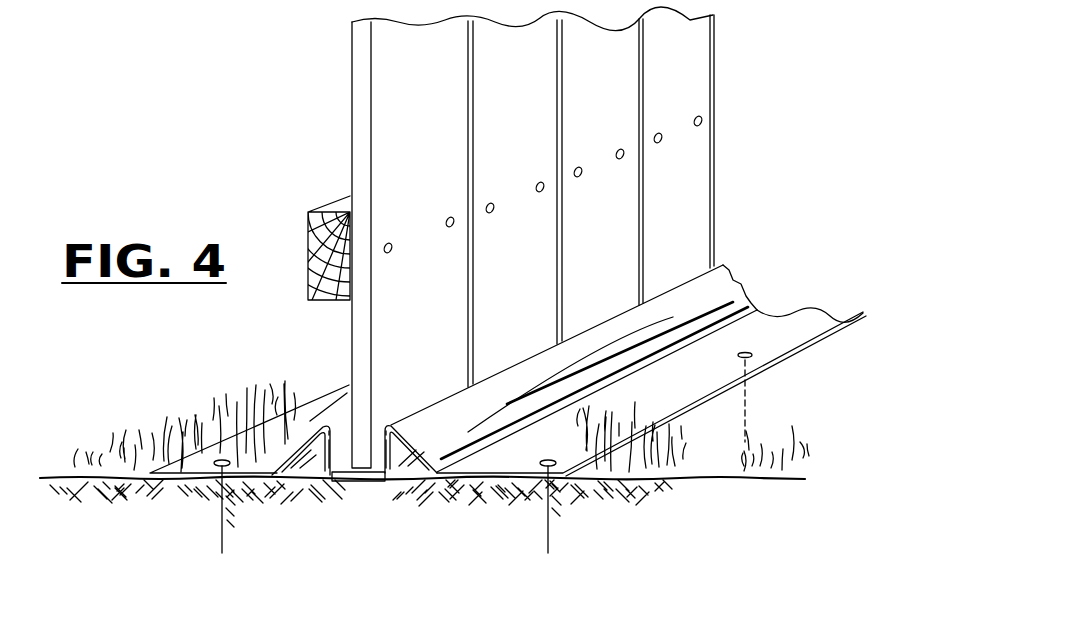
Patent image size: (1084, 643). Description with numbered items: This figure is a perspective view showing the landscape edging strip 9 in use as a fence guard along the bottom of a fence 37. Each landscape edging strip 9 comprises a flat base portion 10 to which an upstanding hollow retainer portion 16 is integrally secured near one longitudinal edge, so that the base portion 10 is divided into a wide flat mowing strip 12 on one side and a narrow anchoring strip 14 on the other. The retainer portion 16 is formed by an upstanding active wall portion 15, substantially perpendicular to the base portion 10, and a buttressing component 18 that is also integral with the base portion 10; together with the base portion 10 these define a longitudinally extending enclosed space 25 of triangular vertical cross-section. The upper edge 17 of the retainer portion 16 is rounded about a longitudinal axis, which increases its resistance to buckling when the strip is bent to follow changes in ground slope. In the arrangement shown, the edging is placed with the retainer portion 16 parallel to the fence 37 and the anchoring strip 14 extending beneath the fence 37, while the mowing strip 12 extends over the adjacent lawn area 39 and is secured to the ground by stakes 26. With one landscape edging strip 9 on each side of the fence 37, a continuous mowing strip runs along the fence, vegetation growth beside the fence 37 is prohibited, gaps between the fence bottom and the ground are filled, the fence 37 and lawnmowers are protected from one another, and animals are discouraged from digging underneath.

The landscape edging strip 9 is at (298, 387).
The base portion 10 is at (240, 452).
The mowing strip 12 is at (520, 375).
The anchoring strip 14 is at (348, 486).
The upstanding active wall portion 15 is at (343, 420).
The retainer portion 16 is at (300, 425).
The upper edge 17 is at (323, 421).
The buttressing component 18 is at (510, 382).
The enclosed space 25 is at (315, 463).
The stakes 26 is at (233, 466).
The fence 37 is at (527, 113).
The lawn area 39 is at (150, 415).